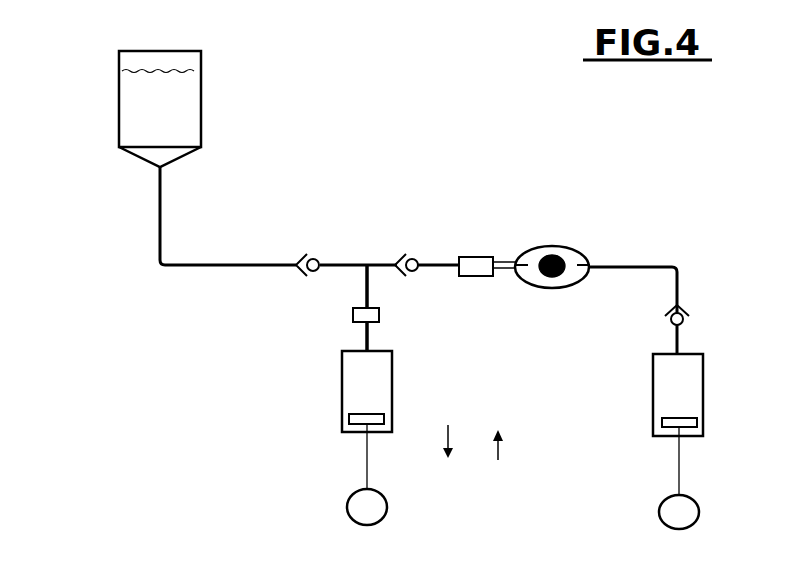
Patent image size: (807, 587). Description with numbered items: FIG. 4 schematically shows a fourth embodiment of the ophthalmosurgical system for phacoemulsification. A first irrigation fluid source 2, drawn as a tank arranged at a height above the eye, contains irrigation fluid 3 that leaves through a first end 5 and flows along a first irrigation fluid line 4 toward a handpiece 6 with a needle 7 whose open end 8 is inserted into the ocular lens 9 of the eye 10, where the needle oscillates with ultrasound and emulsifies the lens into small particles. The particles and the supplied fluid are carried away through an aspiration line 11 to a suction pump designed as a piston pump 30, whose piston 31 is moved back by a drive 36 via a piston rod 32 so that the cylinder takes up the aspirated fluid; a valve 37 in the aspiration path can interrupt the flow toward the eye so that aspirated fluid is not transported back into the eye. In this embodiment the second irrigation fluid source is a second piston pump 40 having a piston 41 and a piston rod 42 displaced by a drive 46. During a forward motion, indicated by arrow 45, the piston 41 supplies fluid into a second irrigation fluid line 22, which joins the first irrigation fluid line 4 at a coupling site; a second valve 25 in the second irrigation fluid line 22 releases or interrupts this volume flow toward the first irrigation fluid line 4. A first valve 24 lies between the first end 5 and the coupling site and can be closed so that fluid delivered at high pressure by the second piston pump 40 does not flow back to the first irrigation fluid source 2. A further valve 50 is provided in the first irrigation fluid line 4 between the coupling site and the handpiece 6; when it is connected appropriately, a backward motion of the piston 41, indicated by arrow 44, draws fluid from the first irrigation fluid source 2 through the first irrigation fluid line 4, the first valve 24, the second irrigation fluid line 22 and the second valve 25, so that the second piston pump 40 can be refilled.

The first irrigation fluid source 2 is at (119, 98).
The irrigation fluid 3 is at (129, 133).
The first irrigation fluid line 4 is at (193, 266).
The first end 5 is at (160, 167).
The handpiece 6 is at (469, 257).
The needle 7 is at (503, 260).
The open end 8 is at (521, 262).
The ocular lens 9 is at (552, 258).
The eye 10 is at (582, 250).
The aspiration line 11 is at (667, 263).
The second irrigation fluid line 22 is at (369, 340).
The first valve 24 is at (300, 258).
The second valve 25 is at (379, 315).
The piston pump 30 is at (703, 390).
The piston 31 is at (697, 421).
The piston rod 32 is at (679, 466).
The drive 36 is at (699, 512).
The valve 37 is at (683, 307).
The second piston pump 40 is at (342, 358).
The piston 41 is at (349, 417).
The piston rod 42 is at (367, 456).
The arrow 44 is at (450, 441).
The arrow 45 is at (500, 451).
The drive 46 is at (347, 507).
The valve 50 is at (397, 258).